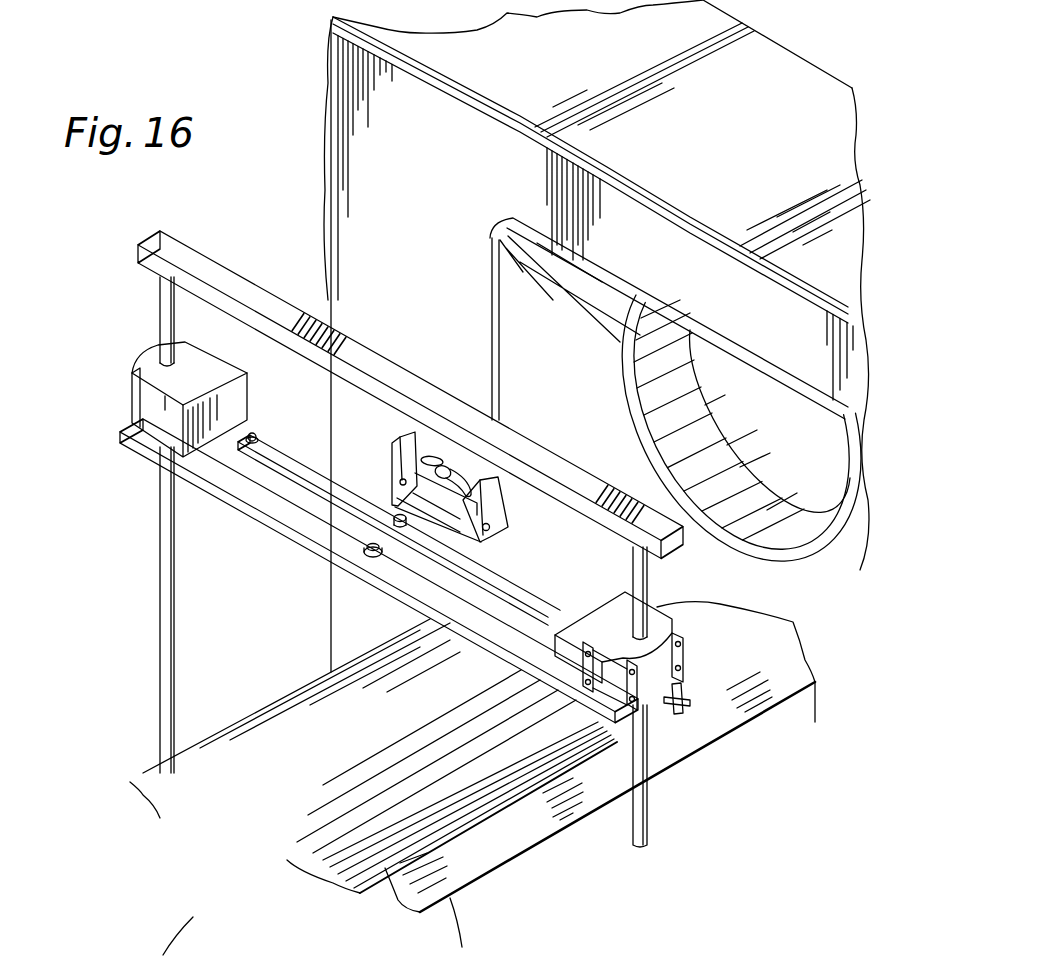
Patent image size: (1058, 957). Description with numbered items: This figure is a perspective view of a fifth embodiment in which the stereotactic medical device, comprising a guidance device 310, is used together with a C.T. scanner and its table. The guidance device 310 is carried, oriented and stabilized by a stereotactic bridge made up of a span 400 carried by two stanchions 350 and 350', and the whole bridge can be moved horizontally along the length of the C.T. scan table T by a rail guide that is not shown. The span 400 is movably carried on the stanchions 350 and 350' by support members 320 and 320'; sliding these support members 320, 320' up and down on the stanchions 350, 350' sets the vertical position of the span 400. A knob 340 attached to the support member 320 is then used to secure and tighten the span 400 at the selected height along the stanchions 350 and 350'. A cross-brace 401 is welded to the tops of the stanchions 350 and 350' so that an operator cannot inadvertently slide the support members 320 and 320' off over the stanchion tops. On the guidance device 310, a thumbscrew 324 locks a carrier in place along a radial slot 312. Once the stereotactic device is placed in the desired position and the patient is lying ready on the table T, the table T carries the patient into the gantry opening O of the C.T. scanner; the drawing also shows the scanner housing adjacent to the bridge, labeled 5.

The machine housing 5 is at (320, 175).
The gantry opening O is at (733, 380).
The cross-brace 401 is at (279, 292).
The span 400 is at (329, 468).
The guidance device 310 is at (502, 544).
The radial slot 312 is at (494, 468).
The thumbscrew 324 is at (447, 462).
The support member 320 is at (657, 638).
The support member 320' is at (220, 399).
The knob 340 is at (670, 708).
The stanchion 350 is at (643, 719).
The stanchion 350' is at (108, 525).
The C.T. scan table T is at (158, 783).